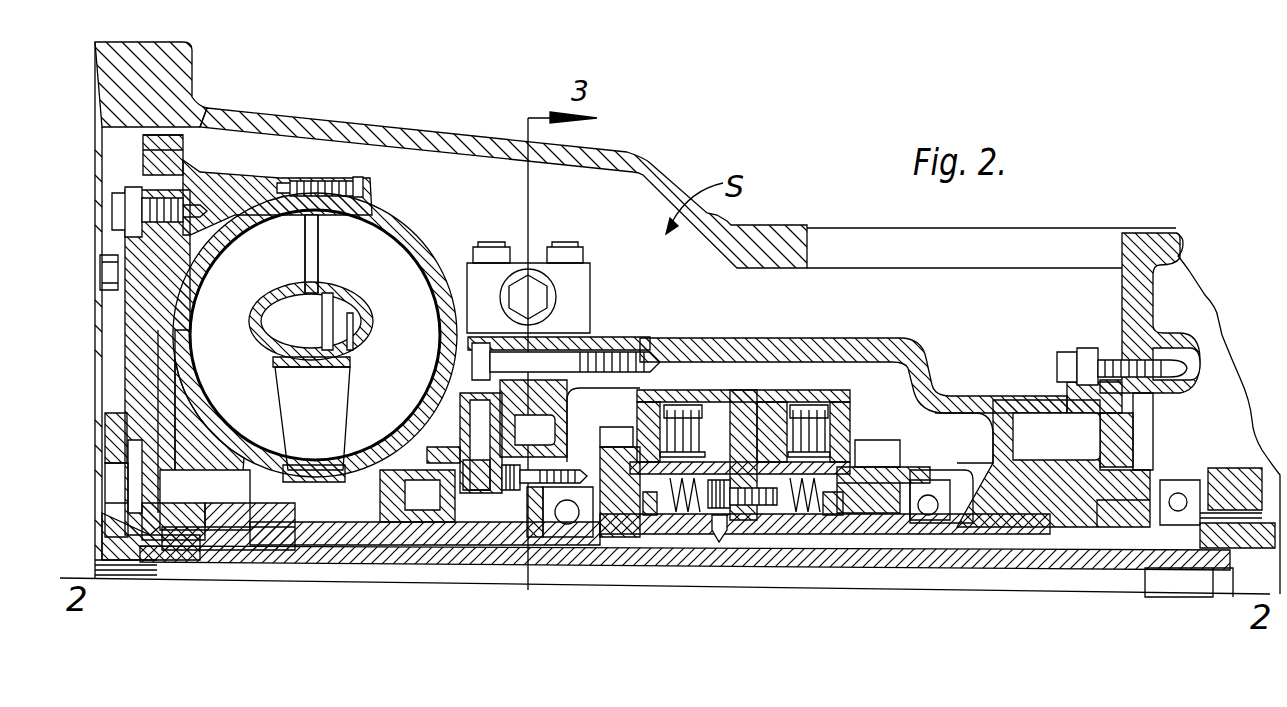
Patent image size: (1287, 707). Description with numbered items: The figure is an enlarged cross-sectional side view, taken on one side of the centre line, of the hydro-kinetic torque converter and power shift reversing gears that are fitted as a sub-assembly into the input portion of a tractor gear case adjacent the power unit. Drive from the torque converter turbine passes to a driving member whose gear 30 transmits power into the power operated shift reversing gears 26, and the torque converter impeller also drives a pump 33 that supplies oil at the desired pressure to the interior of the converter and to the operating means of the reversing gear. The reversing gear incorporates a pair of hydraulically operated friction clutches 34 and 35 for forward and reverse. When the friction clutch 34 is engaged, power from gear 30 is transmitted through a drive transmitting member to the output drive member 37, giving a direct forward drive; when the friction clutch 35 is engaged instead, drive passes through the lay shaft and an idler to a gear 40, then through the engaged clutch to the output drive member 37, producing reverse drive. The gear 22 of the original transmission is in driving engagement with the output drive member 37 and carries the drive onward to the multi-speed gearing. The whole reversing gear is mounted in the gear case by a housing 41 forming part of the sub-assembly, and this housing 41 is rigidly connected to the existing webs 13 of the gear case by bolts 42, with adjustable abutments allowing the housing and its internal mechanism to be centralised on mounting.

The webs 13 is at (1150, 345).
The gear 22 is at (1213, 475).
The power operated shift reversing gears 26 is at (882, 386).
The gear 30 is at (611, 438).
The pump 33 is at (483, 477).
The friction clutch 34 is at (687, 473).
The friction clutch 35 is at (820, 482).
The output drive member 37 is at (957, 543).
The gear 40 is at (887, 453).
The housing 41 is at (930, 372).
The bolts 42 is at (1057, 368).